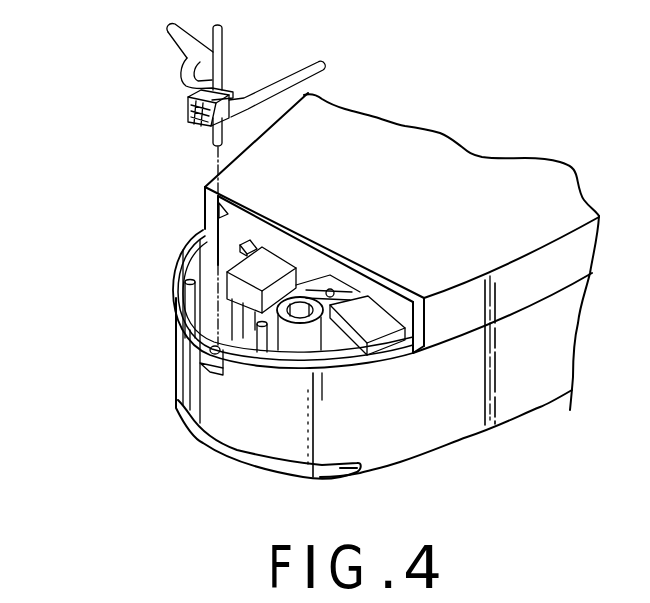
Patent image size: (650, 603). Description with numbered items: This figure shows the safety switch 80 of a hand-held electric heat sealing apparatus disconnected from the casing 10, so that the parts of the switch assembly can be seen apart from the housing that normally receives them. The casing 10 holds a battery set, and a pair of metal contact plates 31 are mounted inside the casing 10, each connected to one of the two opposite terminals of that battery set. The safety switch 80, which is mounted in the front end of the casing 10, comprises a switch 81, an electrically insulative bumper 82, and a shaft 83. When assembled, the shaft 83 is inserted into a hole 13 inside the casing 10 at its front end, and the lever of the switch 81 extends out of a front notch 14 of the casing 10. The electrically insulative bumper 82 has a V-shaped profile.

The casing 10 is at (510, 427).
The hole 13 is at (210, 353).
The front notch 14 is at (217, 373).
The metal contact plates 31 is at (233, 263).
The safety switch 80 is at (117, 115).
The switch 81 is at (190, 118).
The electrically insulative bumper 82 is at (238, 102).
The shaft 83 is at (194, 62).